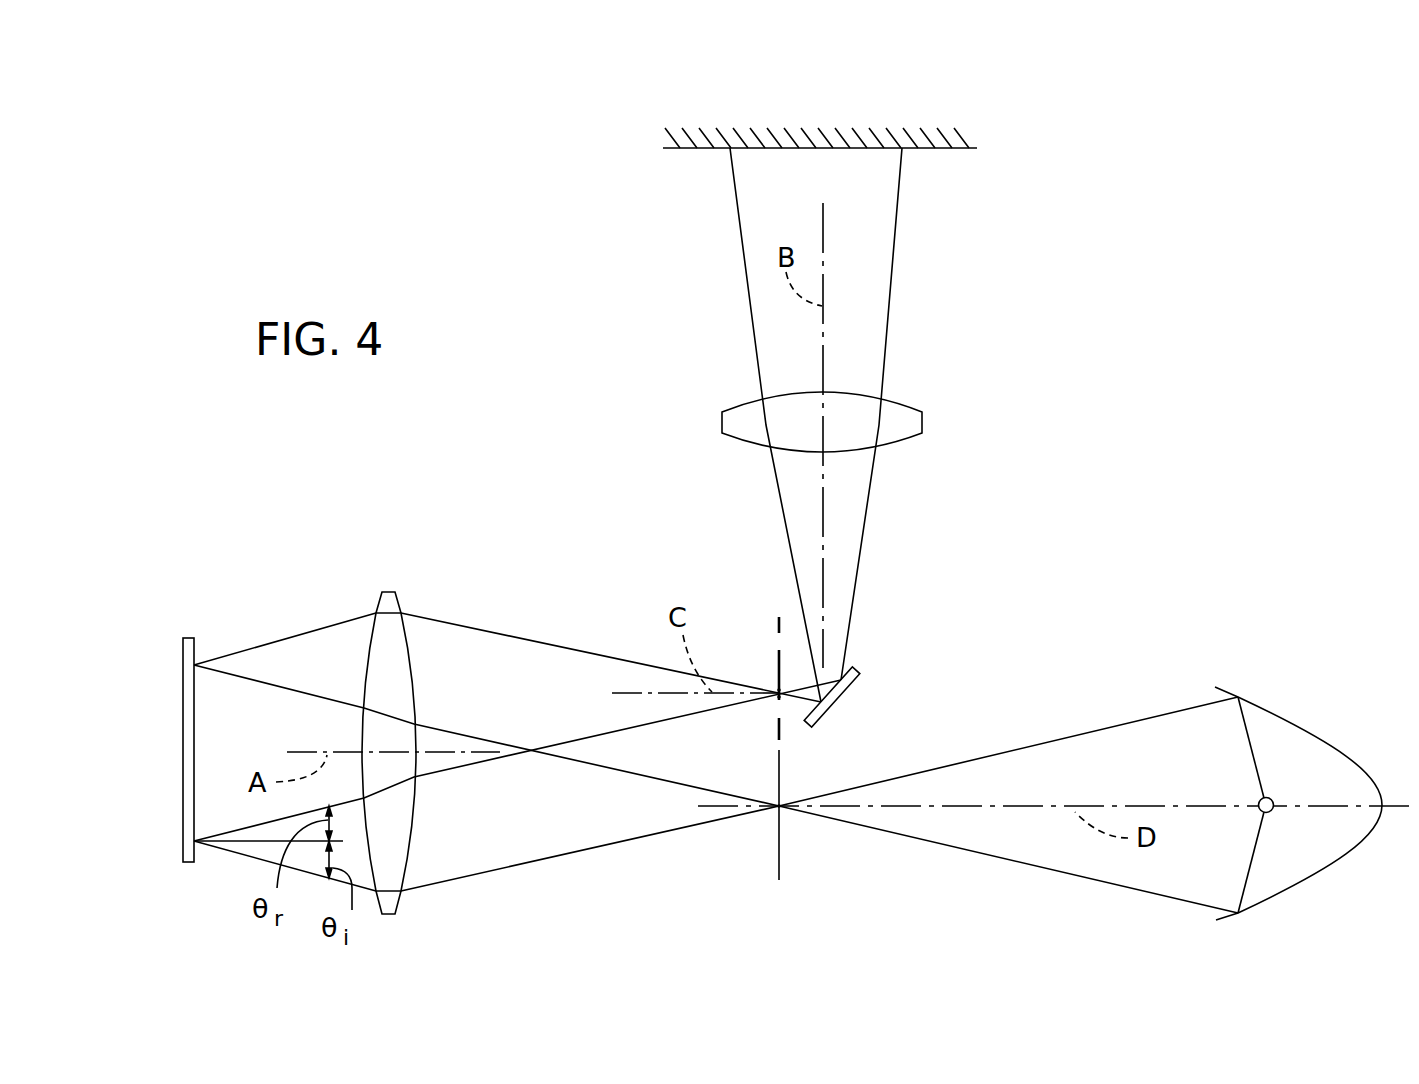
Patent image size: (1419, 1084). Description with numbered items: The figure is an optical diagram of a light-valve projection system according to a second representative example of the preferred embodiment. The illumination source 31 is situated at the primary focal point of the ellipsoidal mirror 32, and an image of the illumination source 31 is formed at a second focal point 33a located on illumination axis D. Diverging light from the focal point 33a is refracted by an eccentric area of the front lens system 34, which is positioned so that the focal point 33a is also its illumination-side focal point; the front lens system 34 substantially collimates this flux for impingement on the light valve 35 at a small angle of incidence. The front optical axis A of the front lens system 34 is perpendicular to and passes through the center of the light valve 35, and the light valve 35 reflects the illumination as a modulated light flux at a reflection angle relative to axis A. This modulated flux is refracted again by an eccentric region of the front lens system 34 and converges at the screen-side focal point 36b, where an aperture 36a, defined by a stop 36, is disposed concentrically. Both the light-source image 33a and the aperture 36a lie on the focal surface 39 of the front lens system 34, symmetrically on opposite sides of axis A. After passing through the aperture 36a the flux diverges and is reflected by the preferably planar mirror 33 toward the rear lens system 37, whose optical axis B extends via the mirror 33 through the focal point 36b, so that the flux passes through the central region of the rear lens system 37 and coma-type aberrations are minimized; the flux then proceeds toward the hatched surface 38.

The illumination source 31 is at (1268, 798).
The ellipsoidal mirror 32 is at (1333, 870).
The mirror 33 is at (855, 668).
The second focal point 33a is at (778, 810).
The front lens system 34 is at (400, 903).
The light valve 35 is at (186, 636).
The stop 36 is at (781, 731).
The aperture 36a is at (776, 689).
The screen-side focal point 36b is at (777, 698).
The rear lens system 37 is at (922, 420).
The detector 38 is at (958, 149).
The focal surface 39 is at (782, 855).